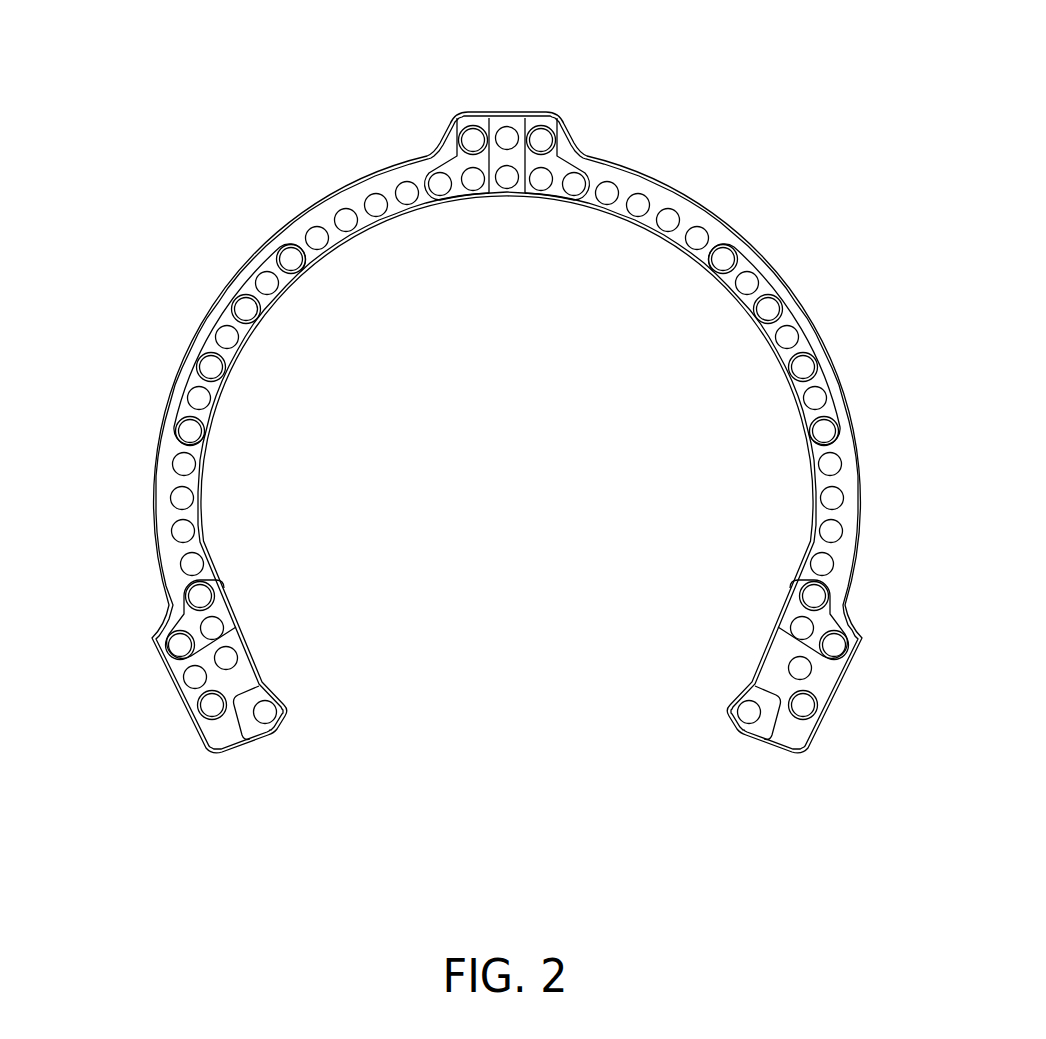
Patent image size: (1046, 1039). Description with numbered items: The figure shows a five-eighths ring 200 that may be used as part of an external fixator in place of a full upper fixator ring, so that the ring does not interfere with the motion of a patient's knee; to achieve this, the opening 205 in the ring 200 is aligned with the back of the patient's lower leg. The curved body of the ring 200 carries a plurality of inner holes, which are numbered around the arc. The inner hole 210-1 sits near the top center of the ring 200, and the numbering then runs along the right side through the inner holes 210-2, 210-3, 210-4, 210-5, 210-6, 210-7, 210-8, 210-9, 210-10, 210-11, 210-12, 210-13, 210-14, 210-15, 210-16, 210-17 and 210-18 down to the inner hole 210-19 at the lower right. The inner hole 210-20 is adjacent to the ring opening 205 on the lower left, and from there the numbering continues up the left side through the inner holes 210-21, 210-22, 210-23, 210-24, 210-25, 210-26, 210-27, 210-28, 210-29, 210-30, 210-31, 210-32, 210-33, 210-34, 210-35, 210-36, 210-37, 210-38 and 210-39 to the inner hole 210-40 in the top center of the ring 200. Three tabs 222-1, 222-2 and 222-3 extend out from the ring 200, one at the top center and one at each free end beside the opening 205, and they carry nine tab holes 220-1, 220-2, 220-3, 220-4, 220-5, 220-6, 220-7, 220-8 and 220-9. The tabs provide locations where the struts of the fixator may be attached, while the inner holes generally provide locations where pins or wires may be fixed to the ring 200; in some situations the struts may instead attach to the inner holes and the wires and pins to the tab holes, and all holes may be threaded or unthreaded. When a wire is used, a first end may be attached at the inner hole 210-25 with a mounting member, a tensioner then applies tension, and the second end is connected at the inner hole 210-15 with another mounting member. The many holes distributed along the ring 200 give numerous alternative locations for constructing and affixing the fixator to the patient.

The ⅝ ring 200 is at (230, 95).
The opening 205 is at (435, 745).
The tab 222-1 is at (522, 110).
The tab 222-2 is at (214, 755).
The tab 222-3 is at (803, 752).
The tab hole 220-1 is at (554, 131).
The tab hole 220-2 is at (500, 127).
The tab hole 220-3 is at (460, 131).
The tab hole 220-4 is at (164, 646).
The tab hole 220-5 is at (183, 681).
The tab hole 220-6 is at (199, 714).
The tab hole 220-7 is at (819, 709).
The tab hole 220-8 is at (788, 664).
The tab hole 220-9 is at (850, 645).
The inner hole 210-1 is at (543, 192).
The inner hole 210-2 is at (586, 178).
The inner hole 210-3 is at (603, 205).
The inner hole 210-4 is at (650, 200).
The inner hole 210-5 is at (660, 230).
The inner hole 210-6 is at (709, 234).
The inner hole 210-7 is at (710, 269).
The inner hole 210-8 is at (759, 278).
The inner hole 210-9 is at (754, 316).
The inner hole 210-10 is at (800, 334).
The inner hole 210-11 is at (787, 370).
The inner hole 210-12 is at (828, 396).
The inner hole 210-13 is at (808, 432).
The inner hole 210-14 is at (842, 461).
The inner hole 210-15 is at (819, 496).
The inner hole 210-16 is at (843, 529).
The inner hole 210-17 is at (809, 561).
The inner hole 210-18 is at (830, 594).
The inner hole 210-19 is at (790, 625).
The inner hole 210-20 is at (239, 658).
The inner hole 210-21 is at (224, 625).
The inner hole 210-22 is at (216, 593).
The inner hole 210-23 is at (204, 560).
The inner hole 210-24 is at (170, 531).
The inner hole 210-25 is at (195, 497).
The inner hole 210-26 is at (171, 463).
The inner hole 210-27 is at (206, 433).
The inner hole 210-28 is at (186, 395).
The inner hole 210-29 is at (227, 370).
The inner hole 210-30 is at (214, 334).
The inner hole 210-31 is at (260, 315).
The inner hole 210-32 is at (255, 279).
The inner hole 210-33 is at (305, 267).
The inner hole 210-34 is at (305, 233).
The inner hole 210-35 is at (356, 228).
The inner hole 210-36 is at (364, 199).
The inner hole 210-37 is at (416, 202).
The inner hole 210-38 is at (429, 177).
The inner hole 210-39 is at (474, 192).
The inner hole 210-40 is at (509, 190).